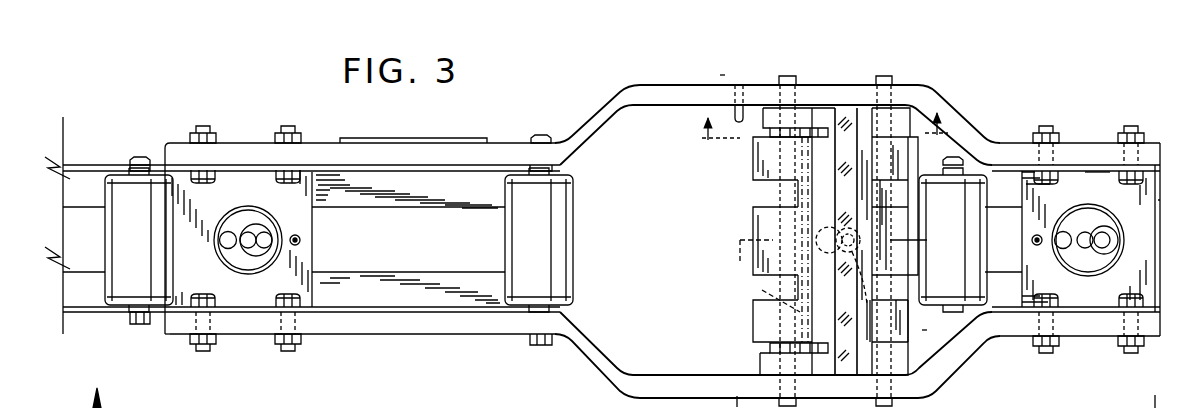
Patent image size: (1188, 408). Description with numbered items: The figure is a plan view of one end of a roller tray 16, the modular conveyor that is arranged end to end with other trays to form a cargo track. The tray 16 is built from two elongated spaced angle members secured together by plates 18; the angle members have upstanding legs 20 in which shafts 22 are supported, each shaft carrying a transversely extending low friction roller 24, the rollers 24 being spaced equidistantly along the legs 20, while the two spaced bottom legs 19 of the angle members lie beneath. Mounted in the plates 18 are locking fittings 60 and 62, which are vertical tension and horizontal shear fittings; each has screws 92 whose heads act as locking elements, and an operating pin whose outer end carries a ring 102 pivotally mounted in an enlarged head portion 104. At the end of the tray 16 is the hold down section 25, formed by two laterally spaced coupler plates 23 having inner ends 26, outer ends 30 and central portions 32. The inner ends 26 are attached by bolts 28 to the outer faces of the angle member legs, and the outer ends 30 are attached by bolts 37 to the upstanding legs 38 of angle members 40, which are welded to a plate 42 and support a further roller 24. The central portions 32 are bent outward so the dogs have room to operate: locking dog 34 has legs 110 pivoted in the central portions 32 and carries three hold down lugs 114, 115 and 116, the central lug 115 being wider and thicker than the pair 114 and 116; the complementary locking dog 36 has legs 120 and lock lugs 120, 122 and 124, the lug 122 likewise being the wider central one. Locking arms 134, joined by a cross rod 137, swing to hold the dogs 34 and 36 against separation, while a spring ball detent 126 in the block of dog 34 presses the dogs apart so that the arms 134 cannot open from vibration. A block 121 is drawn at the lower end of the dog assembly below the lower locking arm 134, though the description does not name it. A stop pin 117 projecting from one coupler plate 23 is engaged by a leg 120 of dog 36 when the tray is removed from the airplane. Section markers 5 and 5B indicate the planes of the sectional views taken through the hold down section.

The roller tray 16 is at (395, 343).
The plate 18 is at (250, 174).
The bottom leg 19 is at (445, 210).
The upstanding leg 20 is at (99, 164).
The shaft 22 is at (140, 157).
The coupler plate 23 is at (615, 85).
The roller 24 is at (118, 230).
The hold down section 25 is at (724, 72).
The inner end 26 is at (378, 152).
The bolt 28 is at (200, 125).
The outer end 30 is at (1080, 143).
The central portion 32 is at (828, 85).
The locking dog 34 is at (760, 200).
The locking dog 36 is at (929, 333).
The bolt 37 is at (1046, 125).
The upstanding leg 38 is at (1094, 174).
The angle member 40 is at (1161, 200).
The plate 42 is at (1135, 259).
The locking fitting 60 is at (302, 228).
The locking fitting 62 is at (1058, 273).
The screw 92 is at (240, 248).
The ring 102 is at (251, 233).
The head portion 104 is at (245, 247).
The leg 110 is at (905, 365).
The hold down lug 114 is at (766, 323).
The hold down lug 115 is at (765, 224).
The hold down lug 116 is at (768, 160).
The stop pin 117 is at (748, 108).
The leg 120 is at (900, 335).
The bottom block 121 is at (772, 366).
The lock lug 122 is at (891, 215).
The lock lug 124 is at (900, 160).
The detent 126 is at (855, 276).
The locking arm 134 is at (770, 132).
The cross rod 137 is at (767, 296).
The section line 5 is at (627, 384).
The section line 5B is at (823, 133).